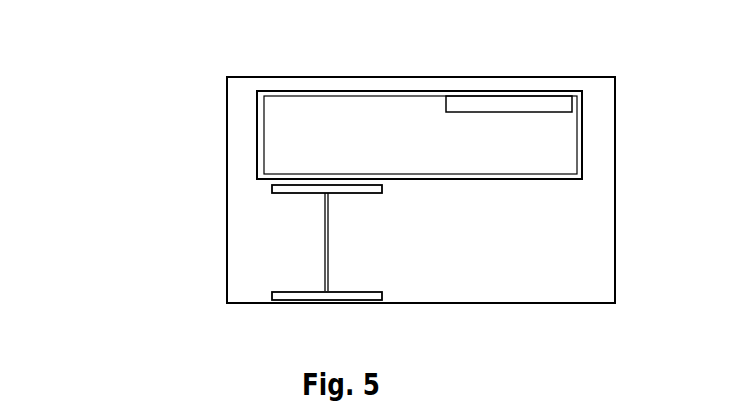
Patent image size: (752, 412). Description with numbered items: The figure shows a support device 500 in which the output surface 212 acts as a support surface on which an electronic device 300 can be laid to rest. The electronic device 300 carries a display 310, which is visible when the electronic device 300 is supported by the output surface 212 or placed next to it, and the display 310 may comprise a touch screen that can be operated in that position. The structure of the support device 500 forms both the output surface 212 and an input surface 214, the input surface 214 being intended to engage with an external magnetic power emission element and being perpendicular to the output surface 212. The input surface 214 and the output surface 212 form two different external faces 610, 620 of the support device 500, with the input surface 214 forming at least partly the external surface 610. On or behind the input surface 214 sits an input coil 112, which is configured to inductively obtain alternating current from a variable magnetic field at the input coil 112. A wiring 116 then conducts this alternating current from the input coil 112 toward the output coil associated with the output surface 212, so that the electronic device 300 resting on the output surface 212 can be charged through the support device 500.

The support device 500 is at (130, 133).
The external face 620 is at (421, 56).
The external surface 610 is at (583, 213).
The input surface 214 is at (421, 329).
The electronic device 300 is at (419, 102).
The display 310 is at (504, 113).
The output surface 212 is at (357, 216).
The wiring 116 is at (278, 240).
The input coil 112 is at (325, 319).